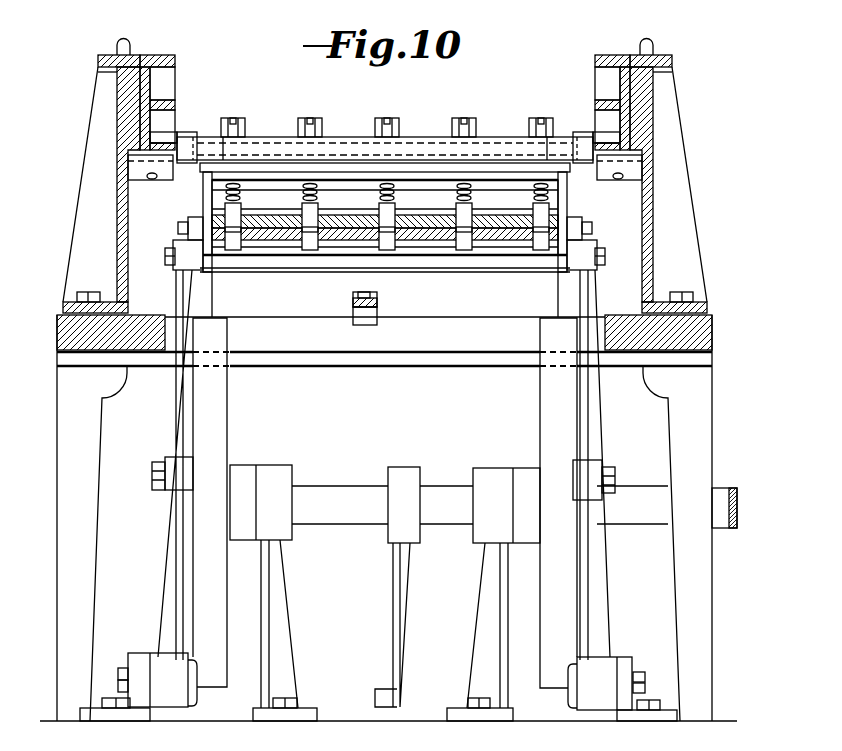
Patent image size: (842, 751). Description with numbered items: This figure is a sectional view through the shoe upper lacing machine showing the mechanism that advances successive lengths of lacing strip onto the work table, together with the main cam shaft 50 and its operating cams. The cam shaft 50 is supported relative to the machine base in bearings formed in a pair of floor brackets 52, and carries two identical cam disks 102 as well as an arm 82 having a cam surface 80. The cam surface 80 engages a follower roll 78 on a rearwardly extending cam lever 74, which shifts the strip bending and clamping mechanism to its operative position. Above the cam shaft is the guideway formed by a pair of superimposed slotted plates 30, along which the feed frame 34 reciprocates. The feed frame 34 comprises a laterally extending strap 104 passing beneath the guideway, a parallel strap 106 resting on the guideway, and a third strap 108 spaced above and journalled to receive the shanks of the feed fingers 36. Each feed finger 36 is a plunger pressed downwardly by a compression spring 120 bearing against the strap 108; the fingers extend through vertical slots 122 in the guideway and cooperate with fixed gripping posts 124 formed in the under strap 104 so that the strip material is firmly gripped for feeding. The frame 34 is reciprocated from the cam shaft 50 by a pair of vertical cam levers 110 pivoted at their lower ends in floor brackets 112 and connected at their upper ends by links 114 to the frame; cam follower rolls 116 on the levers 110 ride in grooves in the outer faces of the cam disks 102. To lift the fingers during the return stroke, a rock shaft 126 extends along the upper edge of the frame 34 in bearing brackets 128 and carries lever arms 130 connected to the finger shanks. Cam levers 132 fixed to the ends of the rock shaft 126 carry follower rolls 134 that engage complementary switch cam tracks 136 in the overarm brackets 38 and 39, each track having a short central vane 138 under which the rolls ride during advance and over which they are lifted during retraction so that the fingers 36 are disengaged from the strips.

The overarm bracket 38 is at (100, 58).
The overarm bracket 39 is at (673, 63).
The switch cam track 136 is at (163, 55).
The central vane 138 is at (174, 88).
The follower roll 134 is at (164, 133).
The cam lever 132 is at (188, 133).
The rock shaft 126 is at (340, 142).
The lever arm 130 is at (312, 118).
The third parallel strap 108 is at (415, 175).
The feed frame 34 is at (202, 203).
The guideway plates 30 is at (286, 228).
The compression spring 120 is at (300, 195).
The feed finger 36 is at (315, 214).
The parallel strap 106 is at (397, 216).
The vertical slot 122 is at (470, 216).
The post 124 is at (537, 248).
The laterally extending strap 104 is at (424, 260).
The cam lever 74 is at (353, 302).
The follower roll 78 is at (353, 323).
The bearing bracket 128 is at (213, 152).
The link 114 is at (190, 241).
The cam lever 110 is at (171, 415).
The cam disk 102 is at (222, 413).
The cam follower roll 116 is at (192, 468).
The cam shaft 50 is at (343, 488).
The floor bracket 52 is at (278, 563).
The arm 82 is at (394, 588).
The cam surface 80 is at (380, 698).
The floor bracket 112 is at (141, 662).